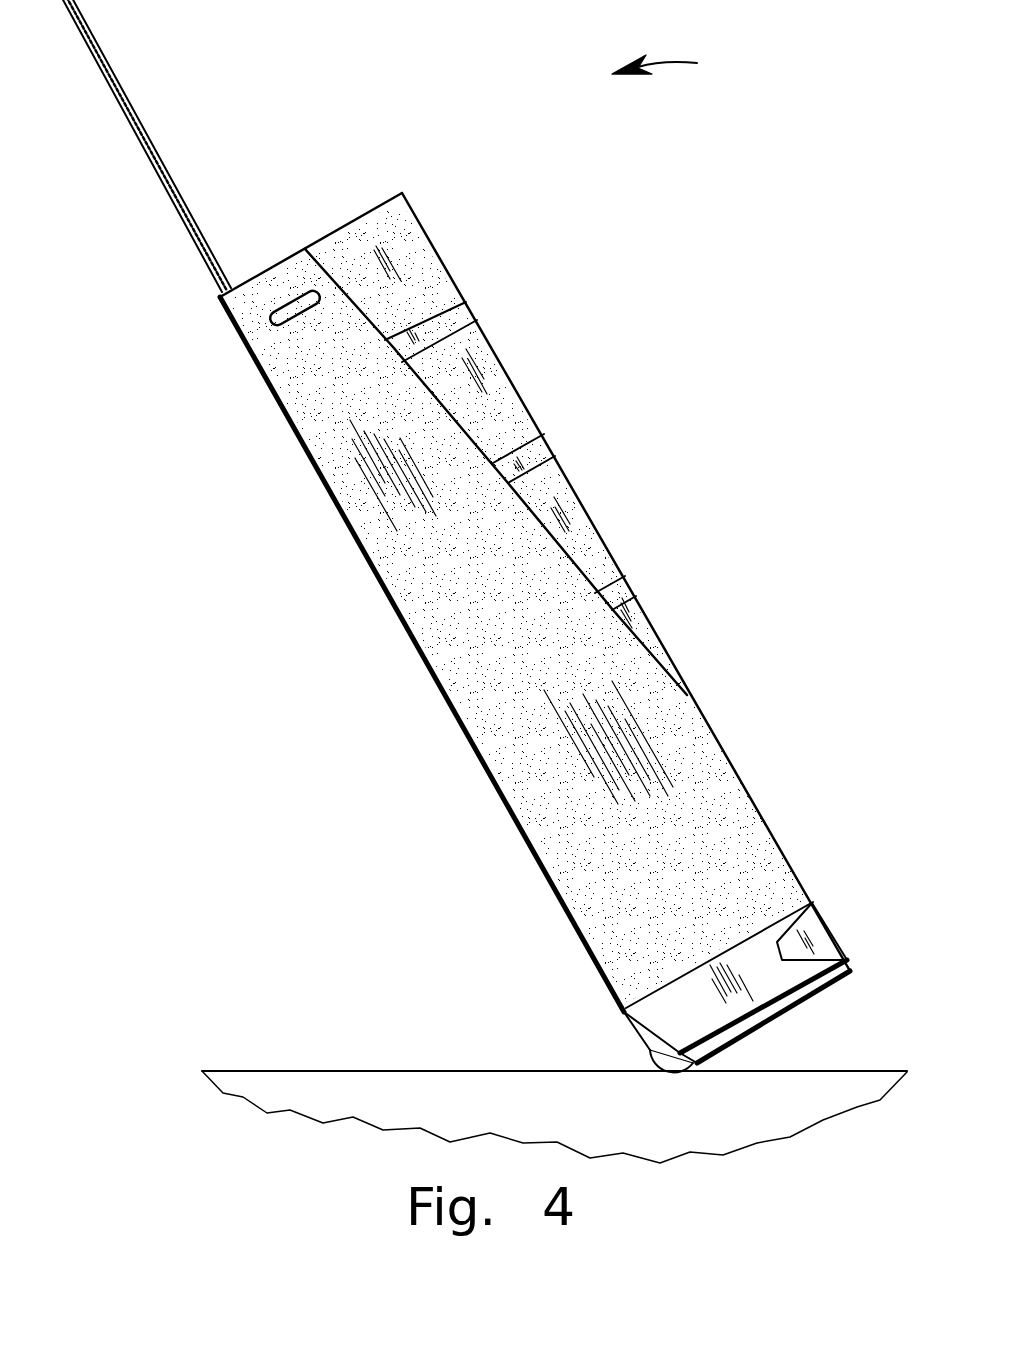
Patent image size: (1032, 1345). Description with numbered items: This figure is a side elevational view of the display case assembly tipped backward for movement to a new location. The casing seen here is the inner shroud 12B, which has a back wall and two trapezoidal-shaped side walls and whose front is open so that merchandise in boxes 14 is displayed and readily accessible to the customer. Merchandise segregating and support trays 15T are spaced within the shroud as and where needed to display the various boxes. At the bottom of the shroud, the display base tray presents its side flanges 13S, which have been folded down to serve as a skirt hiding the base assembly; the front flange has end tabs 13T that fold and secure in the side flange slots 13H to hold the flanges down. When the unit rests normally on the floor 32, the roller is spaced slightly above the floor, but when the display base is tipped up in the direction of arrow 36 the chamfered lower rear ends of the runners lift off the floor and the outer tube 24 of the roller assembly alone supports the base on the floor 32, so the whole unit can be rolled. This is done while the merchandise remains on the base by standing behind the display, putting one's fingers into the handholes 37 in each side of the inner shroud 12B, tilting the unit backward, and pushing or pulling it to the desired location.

The inner shroud 12B is at (418, 600).
The boxes 14 is at (397, 228).
The merchandise segregating and support trays 15T is at (452, 313).
The handholes 37 is at (268, 319).
The end tabs 13T is at (808, 930).
The side flange slots 13H is at (784, 957).
The side flanges 13S is at (705, 1007).
The outer tube 24 is at (660, 1073).
The floor 32 is at (372, 1070).
The arrow 36 is at (691, 72).